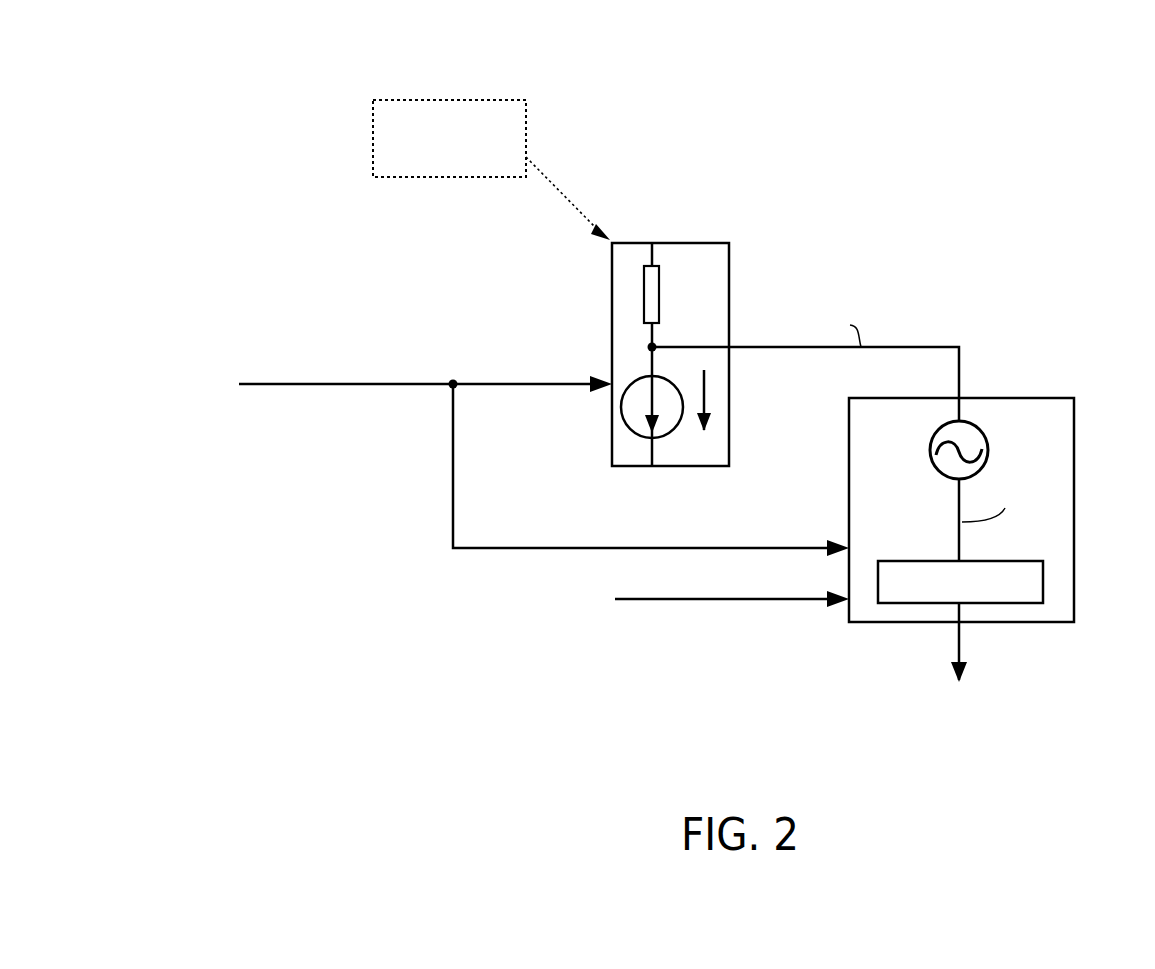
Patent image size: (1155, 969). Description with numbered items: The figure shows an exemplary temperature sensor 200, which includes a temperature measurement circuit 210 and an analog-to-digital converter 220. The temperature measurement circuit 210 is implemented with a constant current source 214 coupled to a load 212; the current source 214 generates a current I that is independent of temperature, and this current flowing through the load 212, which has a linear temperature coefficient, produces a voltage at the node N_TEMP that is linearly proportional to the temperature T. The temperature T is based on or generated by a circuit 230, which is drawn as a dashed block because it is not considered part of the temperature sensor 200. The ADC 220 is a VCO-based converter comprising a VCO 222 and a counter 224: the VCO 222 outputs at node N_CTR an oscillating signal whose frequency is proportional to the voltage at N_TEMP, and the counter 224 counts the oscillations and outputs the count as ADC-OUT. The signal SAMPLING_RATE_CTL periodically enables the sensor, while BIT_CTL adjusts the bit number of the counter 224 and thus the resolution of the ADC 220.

The temperature sensor 200 is at (160, 74).
The temperature measurement circuit 210 is at (623, 346).
The load 212 is at (644, 303).
The constant current source 214 is at (636, 433).
The analog-to-digital converter 220 is at (945, 510).
The voltage-controlled oscillator 222 is at (990, 452).
The counter 224 is at (1043, 578).
The circuit 230 is at (491, 170).